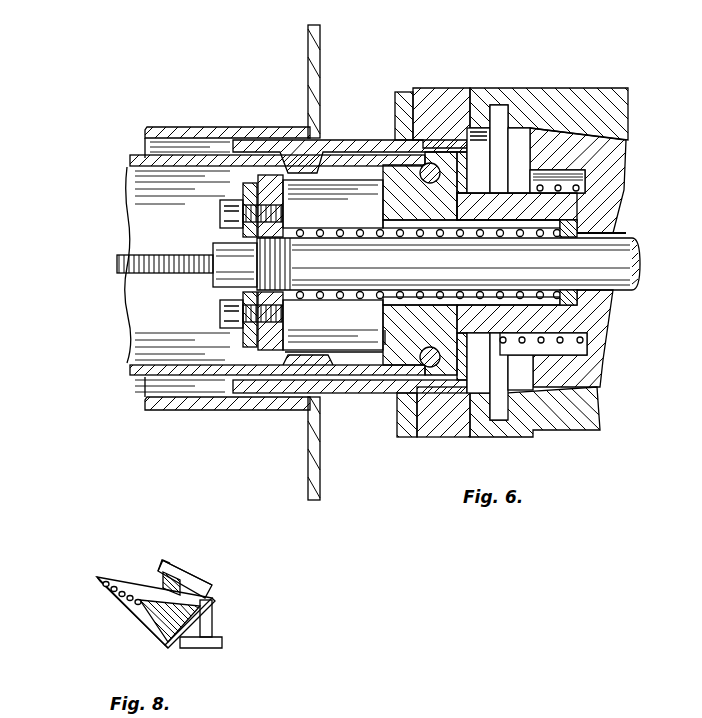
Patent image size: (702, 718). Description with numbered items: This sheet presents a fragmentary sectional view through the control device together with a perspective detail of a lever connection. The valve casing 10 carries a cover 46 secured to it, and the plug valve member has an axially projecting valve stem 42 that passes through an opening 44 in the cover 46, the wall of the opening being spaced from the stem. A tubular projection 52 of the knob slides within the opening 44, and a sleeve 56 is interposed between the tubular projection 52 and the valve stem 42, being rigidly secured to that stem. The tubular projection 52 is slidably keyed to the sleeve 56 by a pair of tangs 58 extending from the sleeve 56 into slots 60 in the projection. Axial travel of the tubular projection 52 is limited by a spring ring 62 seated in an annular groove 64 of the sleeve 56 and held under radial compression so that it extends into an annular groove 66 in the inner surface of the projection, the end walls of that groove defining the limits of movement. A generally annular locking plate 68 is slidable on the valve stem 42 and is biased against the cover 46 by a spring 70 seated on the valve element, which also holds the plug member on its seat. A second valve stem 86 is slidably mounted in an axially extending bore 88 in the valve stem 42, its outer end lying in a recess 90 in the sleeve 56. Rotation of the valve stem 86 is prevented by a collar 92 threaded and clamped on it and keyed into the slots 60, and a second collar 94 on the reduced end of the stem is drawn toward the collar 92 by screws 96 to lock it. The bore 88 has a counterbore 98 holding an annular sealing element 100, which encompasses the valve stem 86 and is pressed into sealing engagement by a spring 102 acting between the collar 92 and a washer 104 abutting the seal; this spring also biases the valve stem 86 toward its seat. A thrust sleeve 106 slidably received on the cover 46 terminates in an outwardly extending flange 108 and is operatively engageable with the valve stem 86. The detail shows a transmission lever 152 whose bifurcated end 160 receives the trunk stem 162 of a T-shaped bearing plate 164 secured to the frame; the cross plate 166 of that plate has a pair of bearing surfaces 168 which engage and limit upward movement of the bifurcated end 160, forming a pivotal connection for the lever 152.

In FIG. 6, the valve casing 10 is at (596, 92).
In FIG. 6, the valve stem 42 is at (523, 185).
In FIG. 6, the opening 44 is at (318, 158).
In FIG. 6, the cover 46 is at (436, 95).
In FIG. 6, the tubular projection 52 is at (130, 163).
In FIG. 6, the sleeve 56 is at (390, 337).
In FIG. 6, the tangs 58 is at (352, 354).
In FIG. 6, the slots 60 is at (363, 353).
In FIG. 6, the spring ring 62 is at (398, 110).
In FIG. 6, the annular groove 64 is at (395, 340).
In FIG. 6, the annular groove 66 is at (403, 412).
In FIG. 6, the locking plate 68 is at (493, 127).
In FIG. 6, the spring 70 is at (570, 186).
In FIG. 6, the valve stem 86 is at (462, 264).
In FIG. 6, the bore 88 is at (613, 238).
In FIG. 6, the recess 90 is at (368, 204).
In FIG. 6, the collar 92 is at (281, 200).
In FIG. 6, the second collar 94 is at (245, 335).
In FIG. 6, the screws 96 is at (220, 211).
In FIG. 6, the counterbore 98 is at (507, 222).
In FIG. 6, the sealing element 100 is at (578, 228).
In FIG. 6, the spring 102 is at (340, 299).
In FIG. 6, the washer 104 is at (547, 275).
In FIG. 6, the thrust sleeve 106 is at (215, 127).
In FIG. 6, the outwardly extending flange 108 is at (335, 262).
In FIG. 8, the transmission lever 152 is at (100, 582).
In FIG. 8, the bifurcated end 160 is at (210, 597).
In FIG. 8, the trunk stem 162 is at (203, 581).
In FIG. 8, the bearing plate 164 is at (212, 617).
In FIG. 8, the cross plate 166 is at (183, 575).
In FIG. 8, the bearing surfaces 168 is at (163, 570).